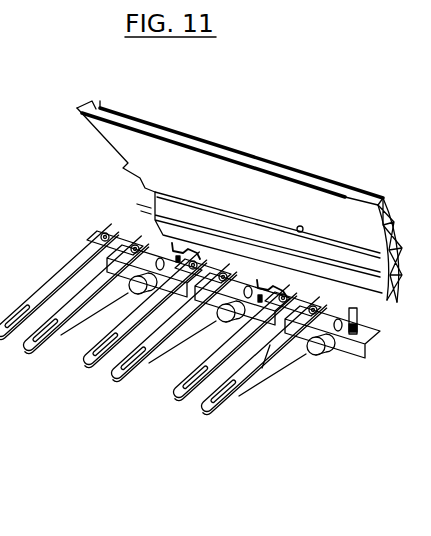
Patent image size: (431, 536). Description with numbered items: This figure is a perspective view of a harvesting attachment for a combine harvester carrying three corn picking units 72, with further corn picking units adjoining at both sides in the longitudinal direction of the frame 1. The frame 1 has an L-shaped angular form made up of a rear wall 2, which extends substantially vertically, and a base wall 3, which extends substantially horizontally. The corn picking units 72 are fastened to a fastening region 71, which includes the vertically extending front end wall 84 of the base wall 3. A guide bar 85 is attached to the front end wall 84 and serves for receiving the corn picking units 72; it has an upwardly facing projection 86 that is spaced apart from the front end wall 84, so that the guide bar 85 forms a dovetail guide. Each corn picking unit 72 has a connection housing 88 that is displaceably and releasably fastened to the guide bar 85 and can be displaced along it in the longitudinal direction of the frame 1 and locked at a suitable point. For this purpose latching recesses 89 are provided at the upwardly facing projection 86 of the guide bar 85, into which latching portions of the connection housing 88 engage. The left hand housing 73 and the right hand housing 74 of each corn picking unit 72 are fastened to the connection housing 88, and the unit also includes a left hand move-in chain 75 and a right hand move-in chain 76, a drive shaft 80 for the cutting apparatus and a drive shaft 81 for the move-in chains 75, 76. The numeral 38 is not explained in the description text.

The frame 1 is at (300, 136).
The rear wall 2 is at (368, 174).
The base wall 3 is at (387, 352).
The tine arm 38 is at (6, 222).
The fastening region 71 is at (362, 357).
The corn picking unit 72 is at (22, 355).
The left hand housing 73 is at (110, 255).
The right hand housing 74 is at (262, 332).
The left hand move-in chain 75 is at (215, 358).
The right hand move-in chain 76 is at (268, 370).
The drive shaft 80 is at (110, 262).
The drive shaft 81 is at (137, 232).
The front end wall 84 is at (268, 278).
The guide bar 85 is at (266, 278).
The upwardly facing projection 86 is at (177, 245).
The connection housing 88 is at (381, 302).
The latching recesses 89 is at (182, 247).